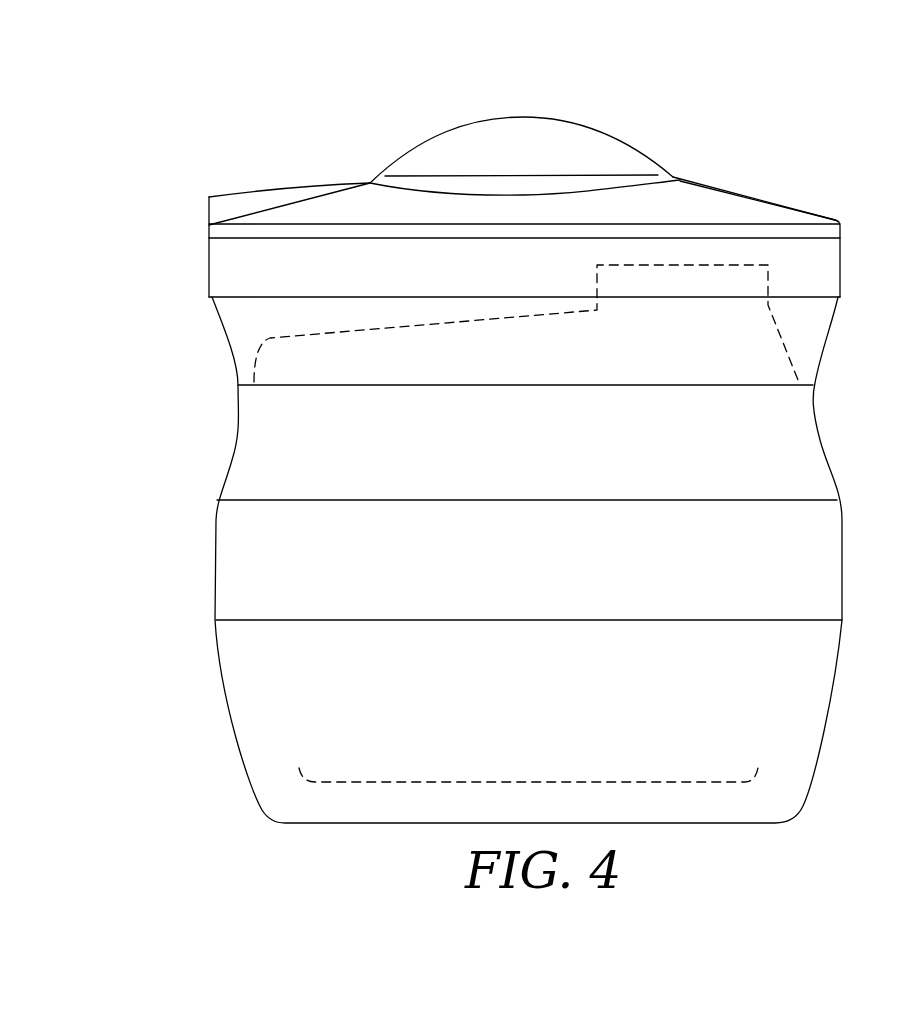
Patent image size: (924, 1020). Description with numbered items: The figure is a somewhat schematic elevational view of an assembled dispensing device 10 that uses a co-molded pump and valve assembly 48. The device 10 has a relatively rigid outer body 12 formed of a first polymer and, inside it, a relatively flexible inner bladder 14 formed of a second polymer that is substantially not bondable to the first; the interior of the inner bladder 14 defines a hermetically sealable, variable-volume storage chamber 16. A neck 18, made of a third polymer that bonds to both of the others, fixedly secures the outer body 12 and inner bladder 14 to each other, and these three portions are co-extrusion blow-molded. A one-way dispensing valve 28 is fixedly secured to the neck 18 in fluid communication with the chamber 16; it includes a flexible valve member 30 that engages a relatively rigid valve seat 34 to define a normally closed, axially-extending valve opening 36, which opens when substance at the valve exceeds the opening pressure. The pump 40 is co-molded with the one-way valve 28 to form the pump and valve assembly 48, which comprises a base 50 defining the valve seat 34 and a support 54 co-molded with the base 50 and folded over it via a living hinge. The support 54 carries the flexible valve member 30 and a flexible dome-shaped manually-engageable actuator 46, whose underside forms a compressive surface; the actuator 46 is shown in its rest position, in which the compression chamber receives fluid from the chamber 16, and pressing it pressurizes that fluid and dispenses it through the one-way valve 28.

The device 10 is at (181, 791).
The outer body 12 is at (215, 583).
The inner bladder 14 is at (780, 317).
The chamber 16 is at (531, 559).
The neck 18 is at (238, 405).
The one-way dispensing valve 28 is at (254, 163).
The flexible valve member 30 is at (222, 203).
The valve seat 34 is at (232, 233).
The valve opening 36 is at (210, 225).
The pump 40 is at (501, 91).
The manually-engageable actuator 46 is at (578, 143).
The pump and valve assembly 48 is at (362, 150).
The base 50 is at (227, 277).
The support 54 is at (704, 202).